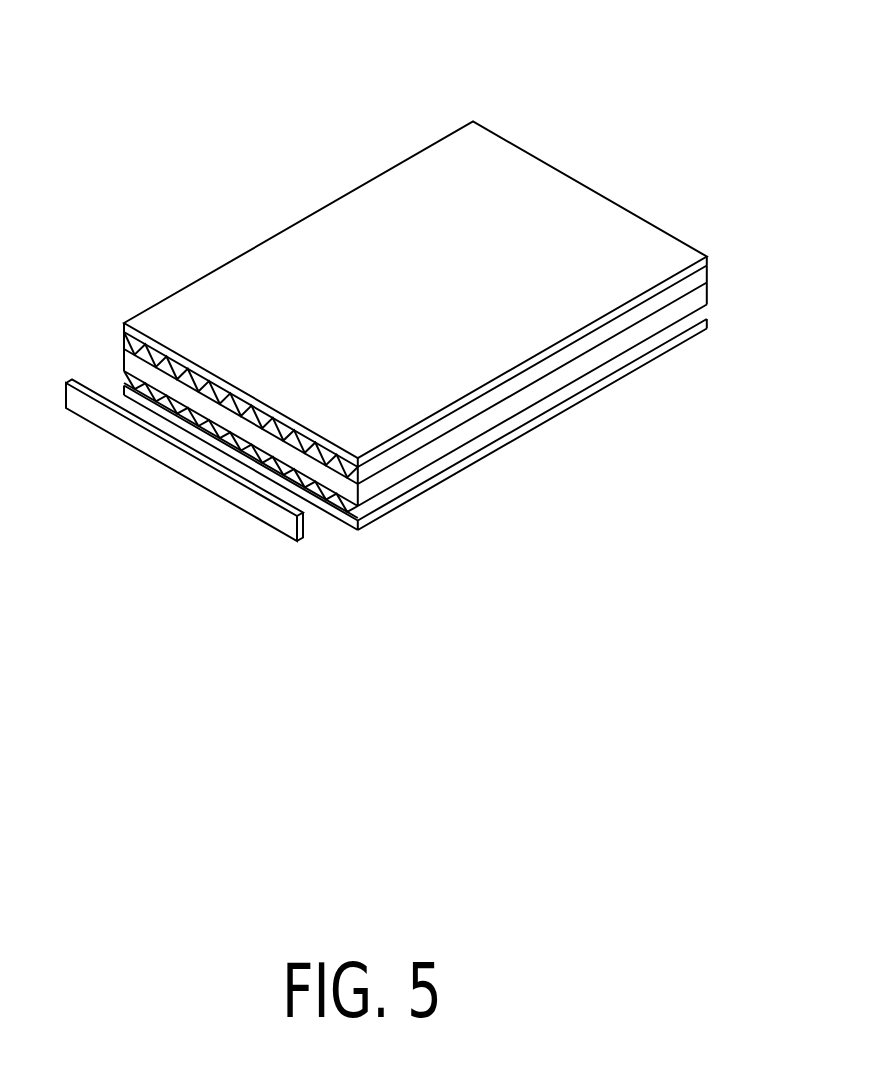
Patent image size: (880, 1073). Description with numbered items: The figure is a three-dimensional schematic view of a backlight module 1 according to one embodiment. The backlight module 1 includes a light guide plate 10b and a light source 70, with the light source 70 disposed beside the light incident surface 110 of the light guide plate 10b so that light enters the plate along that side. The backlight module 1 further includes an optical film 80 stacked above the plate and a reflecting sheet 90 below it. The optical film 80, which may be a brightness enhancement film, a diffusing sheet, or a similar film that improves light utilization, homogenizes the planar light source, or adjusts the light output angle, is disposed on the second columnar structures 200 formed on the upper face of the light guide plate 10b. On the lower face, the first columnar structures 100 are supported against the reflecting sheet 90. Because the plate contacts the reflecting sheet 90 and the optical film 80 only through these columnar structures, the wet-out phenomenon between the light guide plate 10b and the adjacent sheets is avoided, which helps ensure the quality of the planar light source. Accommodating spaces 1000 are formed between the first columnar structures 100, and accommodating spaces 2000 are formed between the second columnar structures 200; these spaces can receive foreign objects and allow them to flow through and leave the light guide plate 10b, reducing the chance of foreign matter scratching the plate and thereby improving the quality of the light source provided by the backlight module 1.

The backlight module 1 is at (60, 49).
The light guide plate 10b is at (104, 344).
The optical film 80 is at (395, 186).
The second columnar structures 200 is at (361, 474).
The accommodating spaces 2000 is at (152, 344).
The light incident surface 110 is at (136, 371).
The first columnar structures 100 is at (359, 510).
The accommodating spaces 1000 is at (331, 505).
The reflecting sheet 90 is at (648, 363).
The light source 70 is at (160, 458).